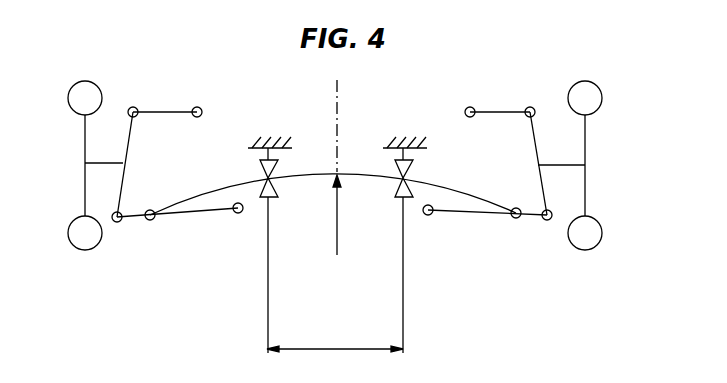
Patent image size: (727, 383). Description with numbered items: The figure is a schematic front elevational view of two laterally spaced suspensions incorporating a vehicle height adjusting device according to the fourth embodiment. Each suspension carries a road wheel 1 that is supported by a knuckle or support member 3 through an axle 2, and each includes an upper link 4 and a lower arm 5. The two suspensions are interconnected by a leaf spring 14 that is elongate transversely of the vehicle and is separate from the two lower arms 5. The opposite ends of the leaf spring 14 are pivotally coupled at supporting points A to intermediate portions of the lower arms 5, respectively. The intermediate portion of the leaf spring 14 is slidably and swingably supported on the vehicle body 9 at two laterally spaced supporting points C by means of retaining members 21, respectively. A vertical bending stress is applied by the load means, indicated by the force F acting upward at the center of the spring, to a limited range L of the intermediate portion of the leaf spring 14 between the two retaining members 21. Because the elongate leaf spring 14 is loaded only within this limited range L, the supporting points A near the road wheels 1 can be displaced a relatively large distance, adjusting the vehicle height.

The road wheel 1 is at (74, 84).
The axle 2 is at (108, 161).
The knuckle or support member 3 is at (131, 135).
The upper link 4 is at (170, 110).
The lower arm 5 is at (180, 217).
The vehicle body 9 is at (275, 140).
The leaf spring 14 is at (358, 172).
The retaining member 21 is at (280, 187).
The supporting point A is at (148, 221).
The supporting point C is at (262, 176).
The force F is at (334, 181).
The limited range L is at (335, 341).